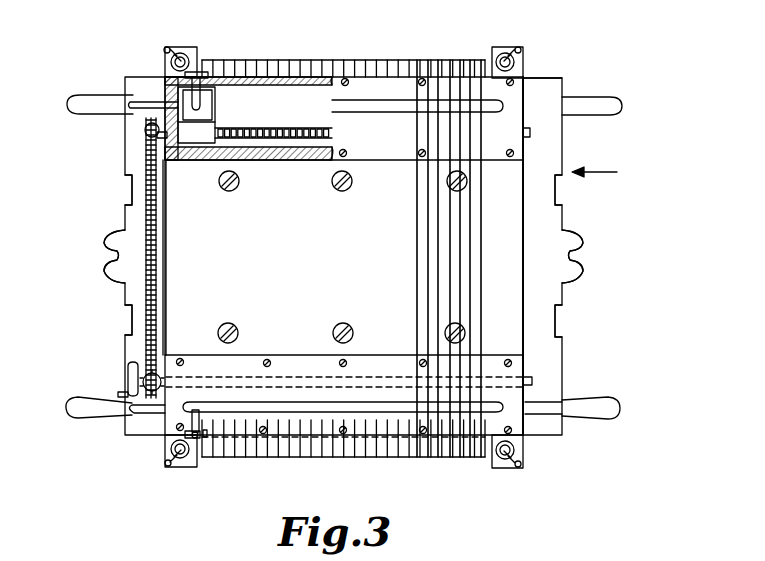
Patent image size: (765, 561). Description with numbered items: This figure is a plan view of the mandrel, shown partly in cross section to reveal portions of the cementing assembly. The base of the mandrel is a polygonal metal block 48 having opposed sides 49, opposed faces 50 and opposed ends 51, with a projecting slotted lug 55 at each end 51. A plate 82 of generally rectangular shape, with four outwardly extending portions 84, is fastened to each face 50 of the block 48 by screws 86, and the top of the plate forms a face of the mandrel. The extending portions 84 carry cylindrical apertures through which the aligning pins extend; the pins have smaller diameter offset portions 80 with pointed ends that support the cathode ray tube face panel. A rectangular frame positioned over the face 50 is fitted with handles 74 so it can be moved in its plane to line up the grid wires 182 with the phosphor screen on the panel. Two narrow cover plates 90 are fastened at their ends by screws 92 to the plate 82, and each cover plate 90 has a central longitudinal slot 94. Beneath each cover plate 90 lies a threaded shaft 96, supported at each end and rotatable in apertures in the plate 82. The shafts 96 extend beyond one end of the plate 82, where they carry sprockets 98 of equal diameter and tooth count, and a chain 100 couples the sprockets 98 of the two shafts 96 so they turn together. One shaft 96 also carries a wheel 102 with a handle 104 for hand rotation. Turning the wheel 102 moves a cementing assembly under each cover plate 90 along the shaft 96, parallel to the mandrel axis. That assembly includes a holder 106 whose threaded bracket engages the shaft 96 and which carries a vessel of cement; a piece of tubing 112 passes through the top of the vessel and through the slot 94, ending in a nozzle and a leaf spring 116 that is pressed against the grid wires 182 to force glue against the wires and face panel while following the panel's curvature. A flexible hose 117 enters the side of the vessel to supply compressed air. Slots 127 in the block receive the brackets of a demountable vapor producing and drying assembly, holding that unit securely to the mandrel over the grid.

The metal block 48 is at (606, 172).
The opposed sides 49 is at (538, 78).
The opposed faces 50 is at (552, 90).
The opposed ends 51 is at (125, 150).
The projecting slotted lug 55 is at (108, 240).
The handles 74 is at (77, 98).
The smaller diameter offset portions 80 is at (170, 466).
The plate 82 is at (244, 262).
The outwardly extending portions 84 is at (185, 47).
The screws 86 is at (342, 192).
The cover plates 90 is at (386, 160).
The screws 92 is at (341, 156).
The central longitudinal slot 94 is at (365, 107).
The threaded shaft 96 is at (274, 128).
The sprockets 98 is at (163, 140).
The chain 100 is at (145, 291).
The wheel 102 is at (131, 366).
The handle 104 is at (120, 393).
The holder 106 is at (206, 111).
The tubing 112 is at (200, 106).
The leaf spring 116 is at (202, 72).
The flexible hose 117 is at (145, 103).
The slots 127 is at (130, 188).
The grid wires 182 is at (482, 273).